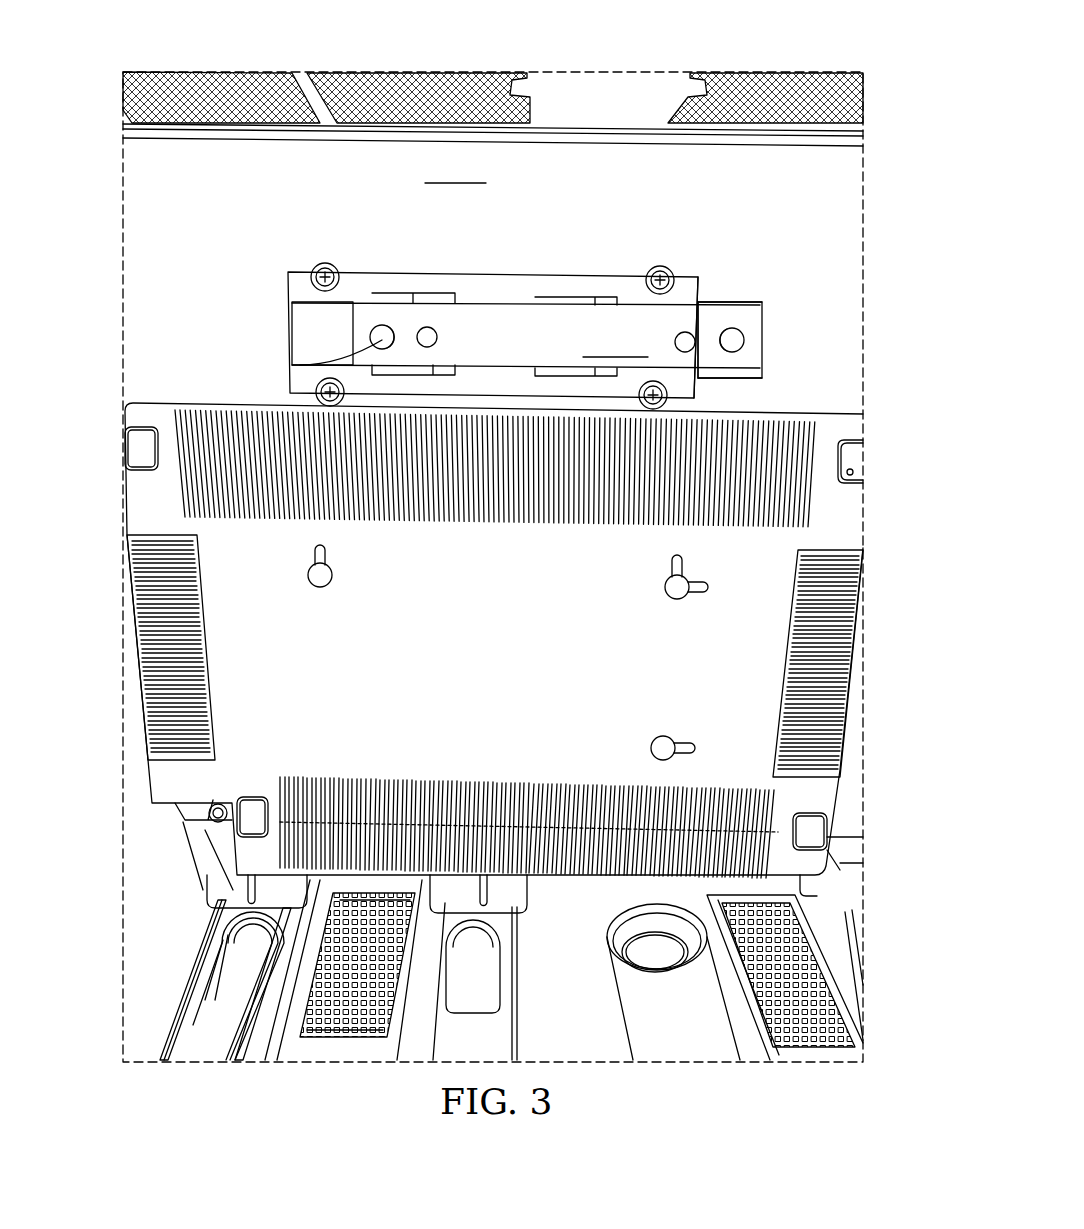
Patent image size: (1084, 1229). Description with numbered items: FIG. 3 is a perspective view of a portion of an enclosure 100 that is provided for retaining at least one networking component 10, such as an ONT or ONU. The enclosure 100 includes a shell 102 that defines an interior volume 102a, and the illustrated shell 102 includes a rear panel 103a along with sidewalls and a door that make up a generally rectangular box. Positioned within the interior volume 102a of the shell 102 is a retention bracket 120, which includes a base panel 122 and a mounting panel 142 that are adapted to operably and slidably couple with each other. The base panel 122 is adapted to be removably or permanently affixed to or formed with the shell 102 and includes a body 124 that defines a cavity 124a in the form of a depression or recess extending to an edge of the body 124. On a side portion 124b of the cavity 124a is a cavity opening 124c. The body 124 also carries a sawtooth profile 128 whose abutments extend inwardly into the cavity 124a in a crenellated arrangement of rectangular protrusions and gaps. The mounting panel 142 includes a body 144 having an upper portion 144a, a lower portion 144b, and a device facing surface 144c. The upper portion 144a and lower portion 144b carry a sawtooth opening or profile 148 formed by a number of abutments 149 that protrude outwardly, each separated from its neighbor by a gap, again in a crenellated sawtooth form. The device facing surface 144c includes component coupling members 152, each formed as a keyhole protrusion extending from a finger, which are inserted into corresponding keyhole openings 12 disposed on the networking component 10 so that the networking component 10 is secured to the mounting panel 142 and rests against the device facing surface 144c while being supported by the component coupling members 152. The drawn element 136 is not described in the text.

The enclosure 100 is at (258, 68).
The shell 102 is at (454, 93).
The interior volume 102a is at (448, 104).
The rear panel 103a is at (458, 169).
The networking component 10 is at (150, 497).
The keyhole opening 12 is at (308, 575).
The retention bracket 120 is at (578, 305).
The base panel 122 is at (368, 273).
The body 124 is at (497, 308).
The cavity 124a is at (300, 314).
The side portion 124b is at (696, 288).
The cavity opening 124c is at (705, 303).
The sawtooth profile 128 is at (477, 297).
The rail block 136 is at (305, 348).
The mounting panel 142 is at (502, 300).
The body 144 is at (773, 342).
The upper portion 144a is at (765, 304).
The lower portion 144b is at (762, 378).
The device facing surface 144c is at (615, 343).
The sawtooth opening or profile 148 is at (530, 362).
The abutments 149 is at (410, 290).
The component coupling member 152 is at (300, 368).